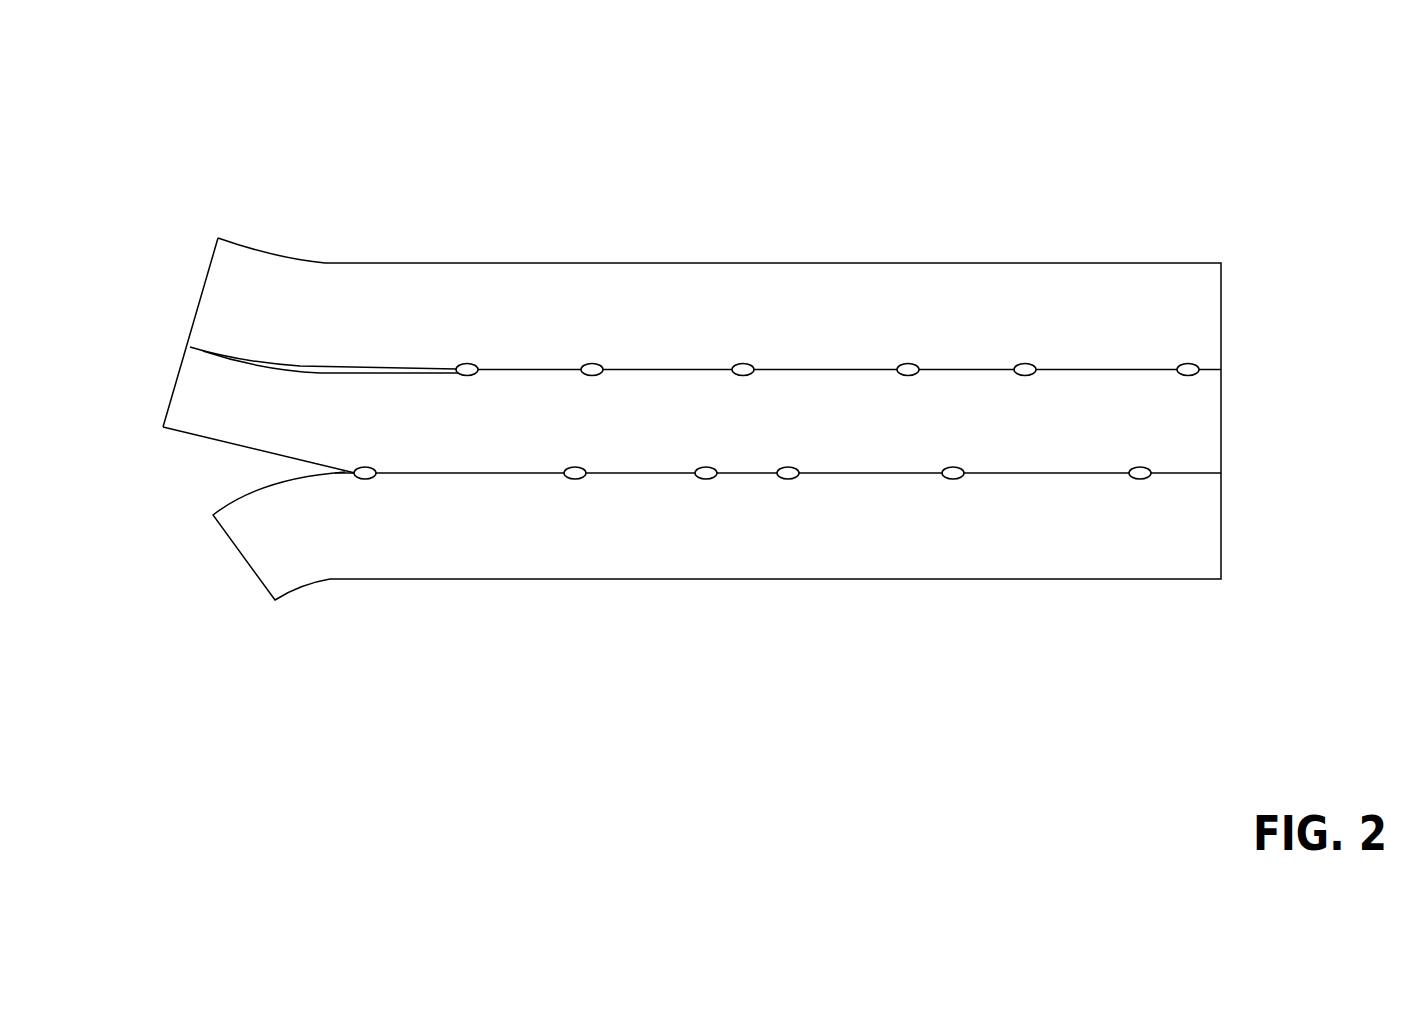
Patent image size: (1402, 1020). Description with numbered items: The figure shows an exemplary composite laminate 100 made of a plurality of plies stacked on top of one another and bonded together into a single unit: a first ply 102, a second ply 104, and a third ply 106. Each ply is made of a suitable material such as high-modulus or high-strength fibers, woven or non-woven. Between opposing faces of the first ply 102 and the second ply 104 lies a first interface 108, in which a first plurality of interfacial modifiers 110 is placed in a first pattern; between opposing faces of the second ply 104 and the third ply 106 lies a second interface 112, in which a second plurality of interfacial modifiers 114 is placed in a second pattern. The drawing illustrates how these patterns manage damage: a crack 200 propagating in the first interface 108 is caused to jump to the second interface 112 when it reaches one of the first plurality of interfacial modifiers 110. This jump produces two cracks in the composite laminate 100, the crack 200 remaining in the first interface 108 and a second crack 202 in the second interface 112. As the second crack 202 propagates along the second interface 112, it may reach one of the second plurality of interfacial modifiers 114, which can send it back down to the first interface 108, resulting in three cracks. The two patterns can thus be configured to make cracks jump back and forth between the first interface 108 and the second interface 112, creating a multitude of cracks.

The composite laminate 100 is at (912, 80).
The first ply 102 is at (433, 582).
The second ply 104 is at (172, 402).
The third ply 106 is at (517, 263).
The first interface 108 is at (1002, 473).
The first plurality of interfacial modifiers 110 is at (365, 480).
The second interface 112 is at (970, 372).
The second plurality of interfacial modifiers 114 is at (458, 363).
The crack 200 is at (225, 477).
The second crack 202 is at (325, 362).